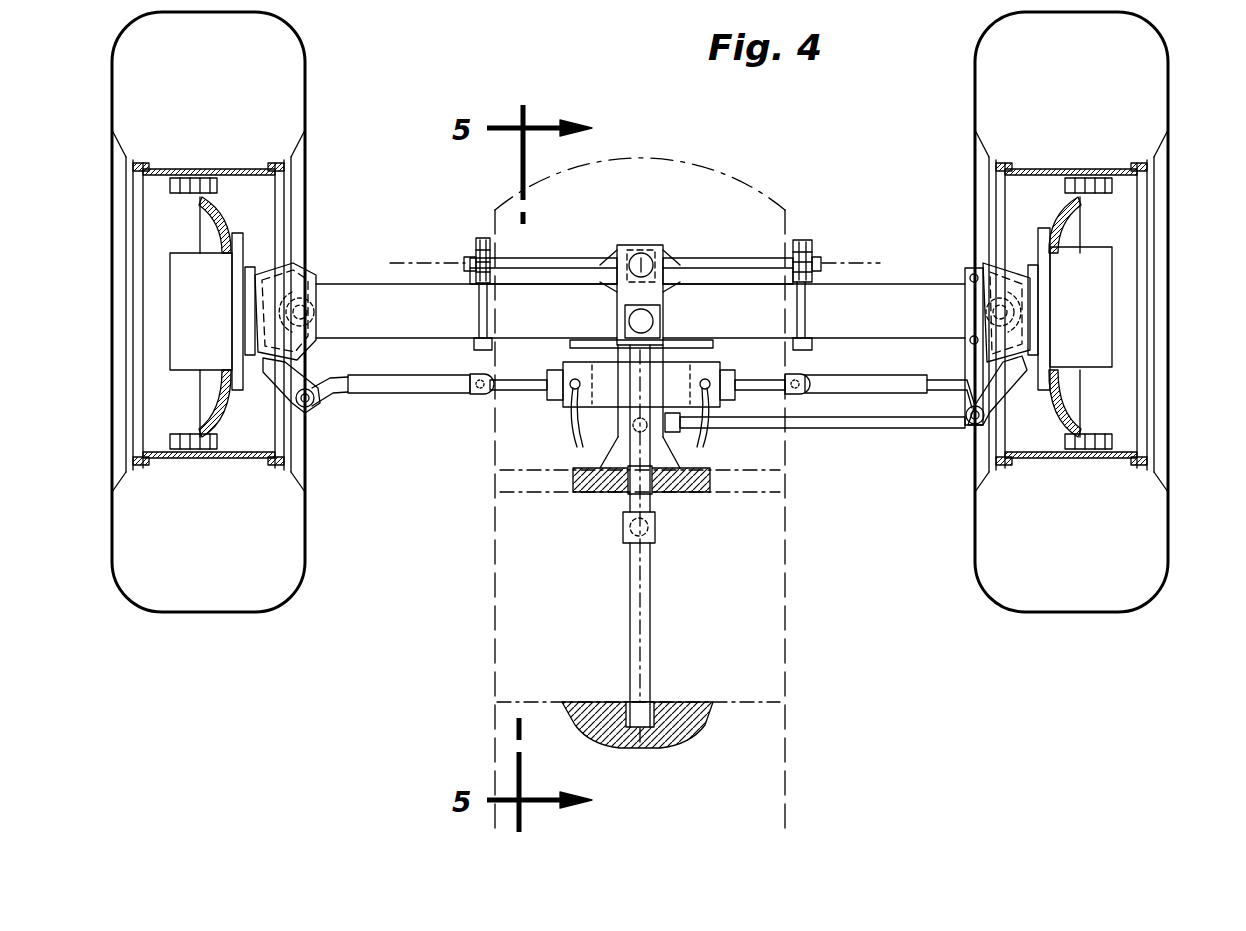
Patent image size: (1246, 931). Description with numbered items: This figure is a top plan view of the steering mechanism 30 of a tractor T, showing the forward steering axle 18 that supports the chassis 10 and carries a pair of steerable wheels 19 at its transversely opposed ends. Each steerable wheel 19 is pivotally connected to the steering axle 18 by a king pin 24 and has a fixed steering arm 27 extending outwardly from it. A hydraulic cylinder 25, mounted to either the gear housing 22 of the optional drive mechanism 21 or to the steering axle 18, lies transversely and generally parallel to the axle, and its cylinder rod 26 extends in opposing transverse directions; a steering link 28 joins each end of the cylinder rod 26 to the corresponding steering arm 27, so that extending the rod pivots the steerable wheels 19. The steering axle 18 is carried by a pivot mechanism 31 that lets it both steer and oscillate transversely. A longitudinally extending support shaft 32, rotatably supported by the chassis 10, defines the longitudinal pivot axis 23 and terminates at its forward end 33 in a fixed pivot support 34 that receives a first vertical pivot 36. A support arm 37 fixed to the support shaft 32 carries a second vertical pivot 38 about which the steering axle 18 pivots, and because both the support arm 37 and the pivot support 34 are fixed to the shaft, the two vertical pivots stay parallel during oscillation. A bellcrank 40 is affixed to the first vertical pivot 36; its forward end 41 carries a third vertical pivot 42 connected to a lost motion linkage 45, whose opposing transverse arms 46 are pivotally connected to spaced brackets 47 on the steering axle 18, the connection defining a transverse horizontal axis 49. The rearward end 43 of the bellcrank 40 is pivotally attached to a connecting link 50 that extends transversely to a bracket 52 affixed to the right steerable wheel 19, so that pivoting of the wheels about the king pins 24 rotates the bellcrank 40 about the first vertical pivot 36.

The chassis 10 is at (660, 153).
The steering axle 18 is at (360, 284).
The steerable wheels 19 is at (305, 88).
The drive mechanism 21 is at (682, 502).
The gear housing 22 is at (680, 450).
The longitudinal pivot axis 23 is at (640, 677).
The king pin 24 is at (318, 300).
The hydraulic cylinder 25 is at (607, 387).
The cylinder rod 26 is at (497, 387).
The steering arm 27 is at (282, 372).
The steering link 28 is at (370, 390).
The steering mechanism 30 is at (447, 480).
The pivot mechanism 31 is at (705, 222).
The support shaft 32 is at (636, 598).
The forward end 33 is at (617, 350).
The fixed pivot support 34 is at (665, 276).
The first vertical pivot 36 is at (660, 322).
The support arm 37 is at (623, 523).
The second vertical pivot 38 is at (655, 524).
The bellcrank 40 is at (617, 262).
The forward end 41 is at (636, 252).
The third vertical pivot 42 is at (642, 256).
The rearward end 43 is at (617, 432).
The lost motion linkage 45 is at (592, 298).
The transverse arms 46 is at (530, 262).
The brackets 47 is at (479, 240).
The transverse horizontal axis 49 is at (402, 268).
The connecting link 50 is at (867, 425).
The bracket 52 is at (814, 354).
The tractor T is at (835, 118).